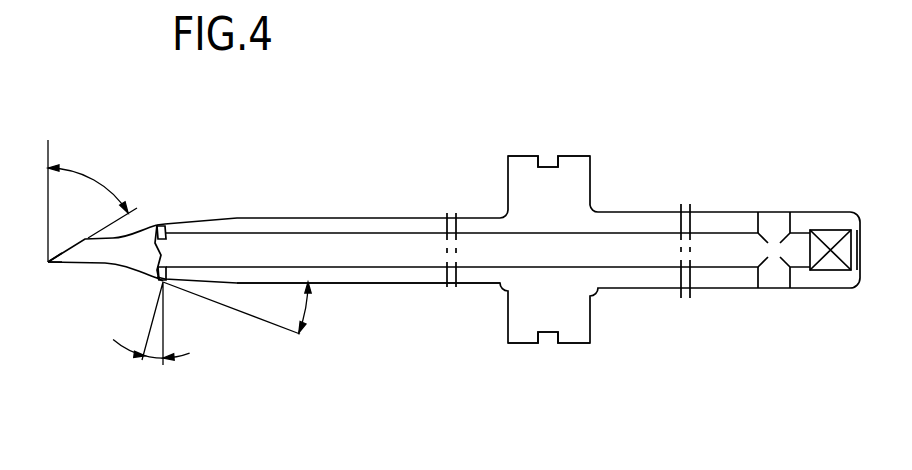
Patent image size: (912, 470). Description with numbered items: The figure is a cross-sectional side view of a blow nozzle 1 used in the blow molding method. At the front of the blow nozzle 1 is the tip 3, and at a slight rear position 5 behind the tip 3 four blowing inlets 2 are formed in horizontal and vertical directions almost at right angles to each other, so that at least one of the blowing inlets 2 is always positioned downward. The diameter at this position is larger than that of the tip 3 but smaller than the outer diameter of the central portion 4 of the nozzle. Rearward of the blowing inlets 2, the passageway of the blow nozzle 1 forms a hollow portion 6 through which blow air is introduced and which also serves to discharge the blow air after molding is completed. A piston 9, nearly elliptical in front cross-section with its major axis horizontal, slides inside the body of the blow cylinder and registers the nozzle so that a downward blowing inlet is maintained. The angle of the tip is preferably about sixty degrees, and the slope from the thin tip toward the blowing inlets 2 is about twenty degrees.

The blow nozzle 1 is at (334, 212).
The blowing inlets 2 is at (181, 286).
The tip 3 is at (57, 266).
The central portion 4 is at (418, 278).
The slight rear position 5 is at (147, 211).
The hollow portion 6 is at (426, 237).
The piston 9 is at (575, 165).